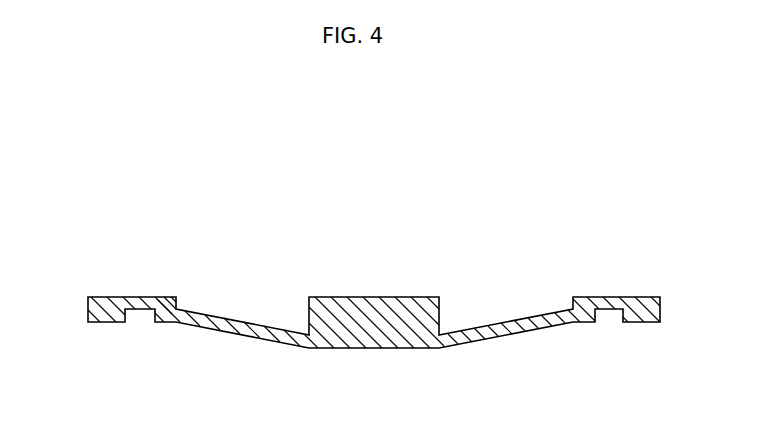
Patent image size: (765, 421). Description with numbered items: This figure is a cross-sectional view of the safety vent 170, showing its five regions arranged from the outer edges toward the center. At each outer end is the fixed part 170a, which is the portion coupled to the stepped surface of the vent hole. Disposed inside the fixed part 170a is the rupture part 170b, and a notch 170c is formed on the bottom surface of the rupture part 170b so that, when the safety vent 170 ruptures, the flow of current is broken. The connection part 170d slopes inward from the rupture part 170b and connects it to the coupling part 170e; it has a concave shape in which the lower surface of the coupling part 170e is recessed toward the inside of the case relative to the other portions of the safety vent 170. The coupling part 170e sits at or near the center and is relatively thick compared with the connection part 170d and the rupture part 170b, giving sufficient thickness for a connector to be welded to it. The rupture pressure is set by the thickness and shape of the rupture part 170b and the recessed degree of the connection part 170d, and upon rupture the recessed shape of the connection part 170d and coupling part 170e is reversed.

The safety vent 170 is at (73, 204).
The fixed part 170a is at (105, 322).
The rupture part 170b is at (138, 297).
The notch 170c is at (152, 297).
The connection part 170d is at (226, 319).
The coupling part 170e is at (373, 318).